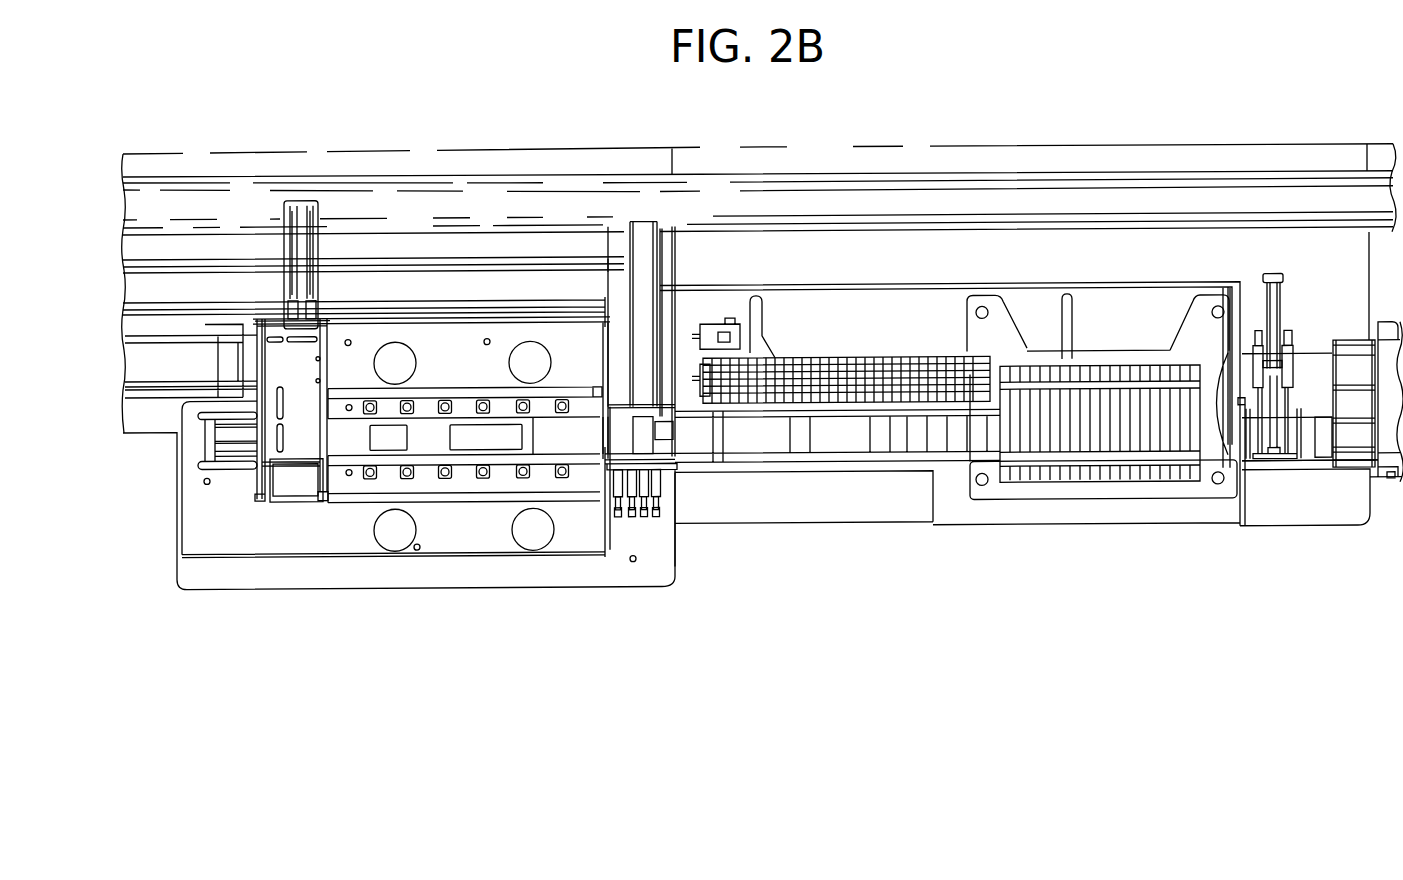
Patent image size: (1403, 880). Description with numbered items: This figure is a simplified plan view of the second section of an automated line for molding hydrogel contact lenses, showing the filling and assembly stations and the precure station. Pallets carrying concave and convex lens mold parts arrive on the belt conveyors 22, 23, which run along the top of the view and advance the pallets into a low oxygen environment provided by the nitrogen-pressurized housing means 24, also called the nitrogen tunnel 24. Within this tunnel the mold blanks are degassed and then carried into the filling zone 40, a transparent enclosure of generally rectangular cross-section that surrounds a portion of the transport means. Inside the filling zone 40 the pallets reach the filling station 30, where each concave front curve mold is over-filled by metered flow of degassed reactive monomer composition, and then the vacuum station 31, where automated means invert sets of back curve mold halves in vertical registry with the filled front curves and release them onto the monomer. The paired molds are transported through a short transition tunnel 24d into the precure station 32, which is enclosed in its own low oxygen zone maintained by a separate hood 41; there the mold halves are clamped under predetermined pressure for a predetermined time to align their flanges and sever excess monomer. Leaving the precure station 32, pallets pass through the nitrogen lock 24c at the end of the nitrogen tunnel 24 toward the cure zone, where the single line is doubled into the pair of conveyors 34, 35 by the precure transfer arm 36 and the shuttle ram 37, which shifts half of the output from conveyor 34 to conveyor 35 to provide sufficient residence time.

The belt conveyor 22 is at (121, 203).
The belt conveyor 23 is at (120, 284).
The housing means (nitrogen tunnel) 24 is at (123, 322).
The nitrogen lock 24c is at (1247, 468).
The transition tunnel 24d is at (673, 477).
The filling station 30 is at (388, 433).
The vacuum station 31 is at (472, 435).
The precure station 32 is at (1134, 512).
The conveyor 34 is at (1323, 422).
The conveyor 35 is at (1350, 372).
The precure transfer arm 36 is at (1190, 343).
The shuttle ram 37 is at (1283, 300).
The filling zone 40 is at (333, 558).
The hood 41 is at (995, 535).